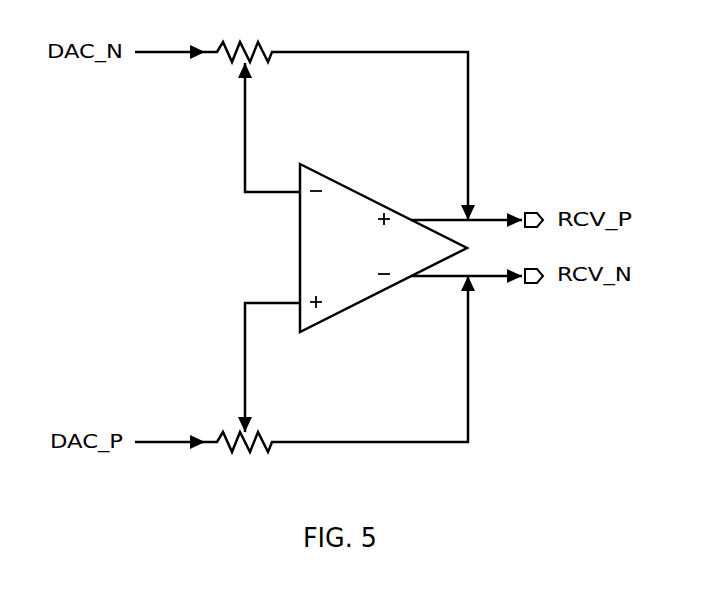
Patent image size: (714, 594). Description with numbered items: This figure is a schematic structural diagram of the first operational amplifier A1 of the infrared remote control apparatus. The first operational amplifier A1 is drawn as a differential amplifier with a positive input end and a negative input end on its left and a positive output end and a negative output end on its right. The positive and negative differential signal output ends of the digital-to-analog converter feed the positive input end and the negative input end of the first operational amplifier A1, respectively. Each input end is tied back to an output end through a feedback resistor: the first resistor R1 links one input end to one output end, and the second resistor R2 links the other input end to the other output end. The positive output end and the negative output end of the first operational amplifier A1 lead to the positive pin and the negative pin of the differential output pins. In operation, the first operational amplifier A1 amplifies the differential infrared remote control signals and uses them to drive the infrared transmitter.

The first resistor R1 is at (240, 37).
The second resistor R2 is at (240, 457).
The first operational amplifier A1 is at (383, 248).